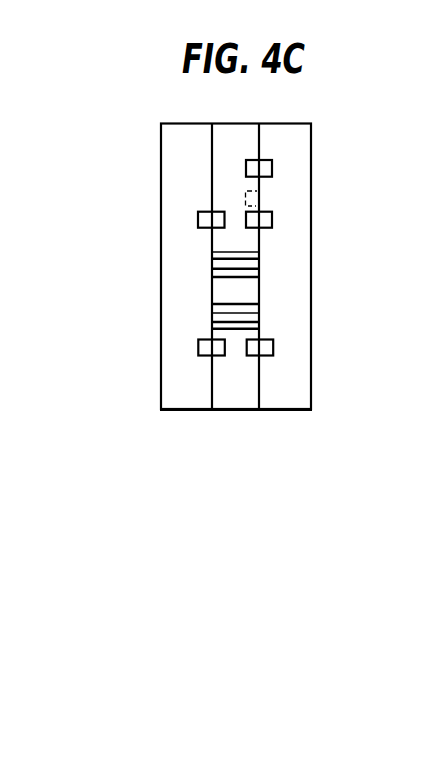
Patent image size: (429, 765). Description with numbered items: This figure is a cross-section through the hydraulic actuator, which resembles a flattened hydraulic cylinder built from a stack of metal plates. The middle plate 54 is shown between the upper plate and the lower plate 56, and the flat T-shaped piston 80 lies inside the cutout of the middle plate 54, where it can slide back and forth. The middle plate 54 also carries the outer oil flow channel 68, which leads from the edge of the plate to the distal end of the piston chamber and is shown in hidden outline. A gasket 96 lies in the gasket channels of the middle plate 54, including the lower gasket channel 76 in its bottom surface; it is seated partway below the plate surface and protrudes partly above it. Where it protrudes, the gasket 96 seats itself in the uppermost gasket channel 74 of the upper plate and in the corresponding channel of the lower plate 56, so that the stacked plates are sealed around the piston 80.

The middle plate 54 is at (247, 395).
The lower plate 56 is at (170, 389).
The outer oil flow channel 68 is at (244, 200).
The uppermost gasket channel 74 is at (272, 166).
The lower gasket channel 76 is at (200, 213).
The piston 80 is at (218, 294).
The gasket 96 is at (198, 220).